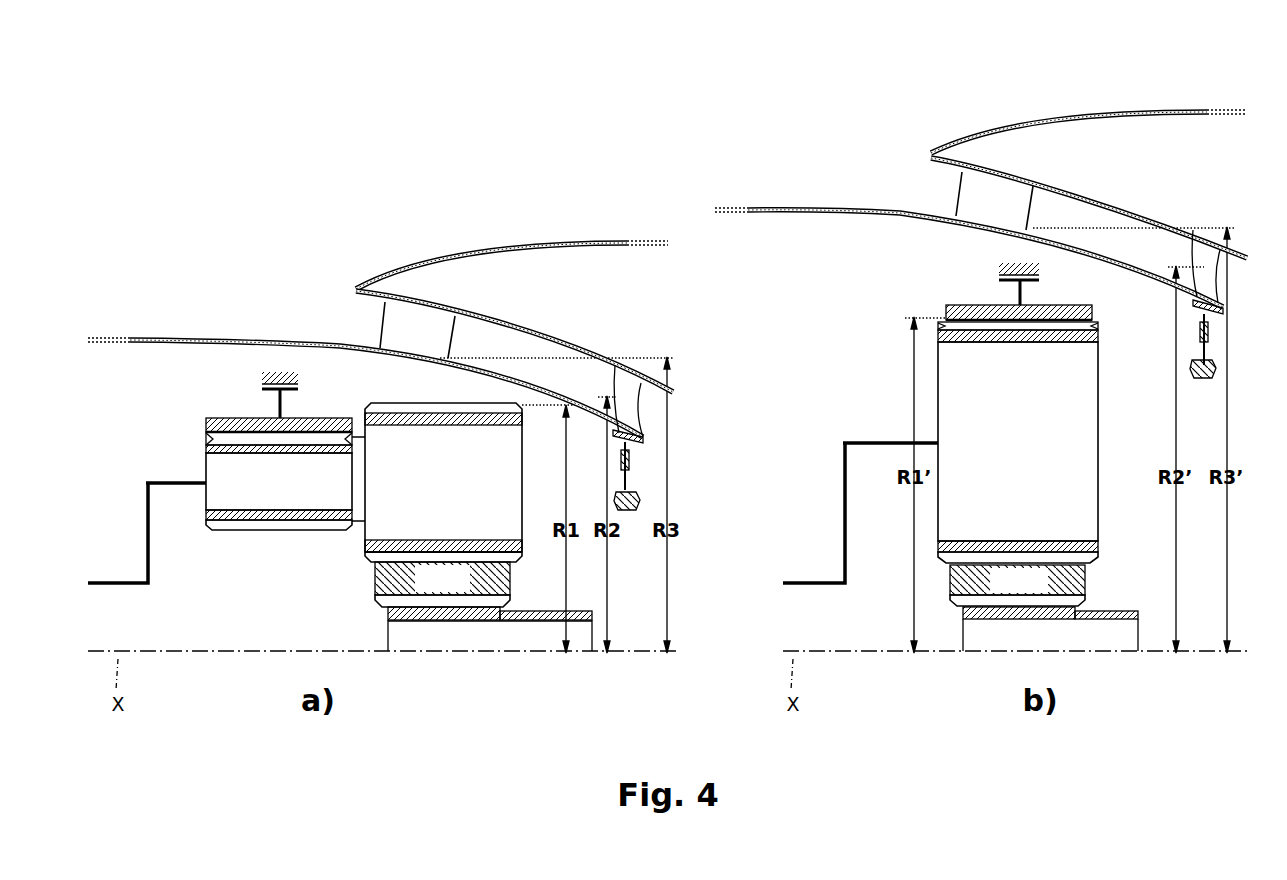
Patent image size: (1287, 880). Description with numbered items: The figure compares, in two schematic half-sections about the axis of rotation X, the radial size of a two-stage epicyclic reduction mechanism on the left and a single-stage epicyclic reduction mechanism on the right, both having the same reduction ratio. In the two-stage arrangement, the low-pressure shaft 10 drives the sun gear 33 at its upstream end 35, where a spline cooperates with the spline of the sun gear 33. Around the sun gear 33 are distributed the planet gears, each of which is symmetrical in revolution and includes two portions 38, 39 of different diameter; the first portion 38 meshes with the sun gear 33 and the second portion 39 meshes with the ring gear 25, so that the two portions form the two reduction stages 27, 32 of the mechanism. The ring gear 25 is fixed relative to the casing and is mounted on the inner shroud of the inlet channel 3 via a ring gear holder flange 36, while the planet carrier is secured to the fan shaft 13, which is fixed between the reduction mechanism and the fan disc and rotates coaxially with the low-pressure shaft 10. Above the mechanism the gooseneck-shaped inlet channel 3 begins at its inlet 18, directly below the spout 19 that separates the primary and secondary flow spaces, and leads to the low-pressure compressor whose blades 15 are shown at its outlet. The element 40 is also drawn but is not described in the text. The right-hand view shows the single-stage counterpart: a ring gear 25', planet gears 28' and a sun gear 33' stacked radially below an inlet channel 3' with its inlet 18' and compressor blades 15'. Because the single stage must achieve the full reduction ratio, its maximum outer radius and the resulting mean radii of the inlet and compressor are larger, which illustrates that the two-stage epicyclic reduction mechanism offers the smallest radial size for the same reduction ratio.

The inlet channel 3 is at (401, 364).
The inlet channel 3' is at (997, 232).
The low-pressure shaft 10 is at (528, 622).
The fan shaft 13 is at (113, 582).
The blade 15 is at (605, 437).
The blade 15' is at (1184, 304).
The inlet 18 is at (380, 330).
The inlet 18' is at (955, 200).
The spout 19 is at (371, 282).
The ring gear 25 is at (270, 401).
The ring gear 25' is at (1011, 288).
The reduction stage 27 is at (478, 634).
The planet gears 28' is at (1018, 442).
The reduction stage 32 is at (258, 560).
The sun gear 33 is at (442, 584).
The sun gear 33' is at (1017, 585).
The upstream end of the low-pressure shaft 35 is at (430, 621).
The ring gear holder flange 36 is at (287, 406).
The first portion of planet gear 38 is at (443, 482).
The second portion of planet gear 39 is at (285, 476).
The hub flange 40 is at (163, 482).